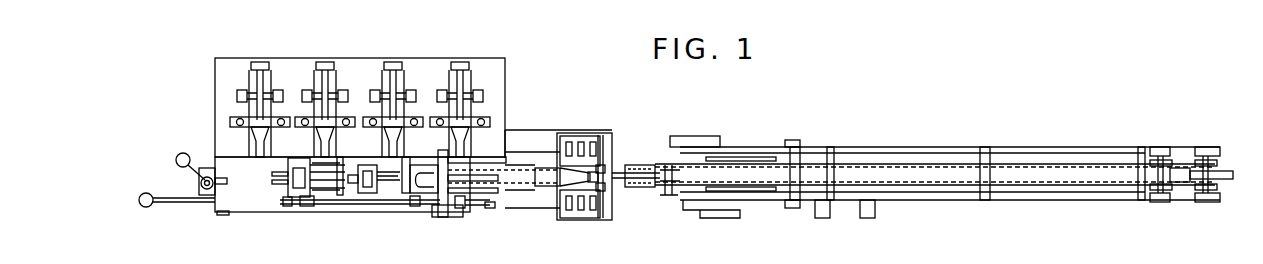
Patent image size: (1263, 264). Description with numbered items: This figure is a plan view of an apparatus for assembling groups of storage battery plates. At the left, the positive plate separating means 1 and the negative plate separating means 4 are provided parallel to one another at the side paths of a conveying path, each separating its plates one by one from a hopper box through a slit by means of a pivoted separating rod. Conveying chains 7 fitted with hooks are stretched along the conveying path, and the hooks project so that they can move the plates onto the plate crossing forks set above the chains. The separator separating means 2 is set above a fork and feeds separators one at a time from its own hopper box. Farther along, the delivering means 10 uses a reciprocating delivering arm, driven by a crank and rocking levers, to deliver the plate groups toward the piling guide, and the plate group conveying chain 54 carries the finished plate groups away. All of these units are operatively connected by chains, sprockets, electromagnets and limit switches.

The positive plate separating means 1 is at (404, 92).
The separator separating means 2 is at (312, 191).
The negative plate separating means 4 is at (273, 93).
The conveying chains 7 is at (522, 140).
The delivering means 10 is at (617, 184).
The plate group conveying chain 54 is at (913, 167).